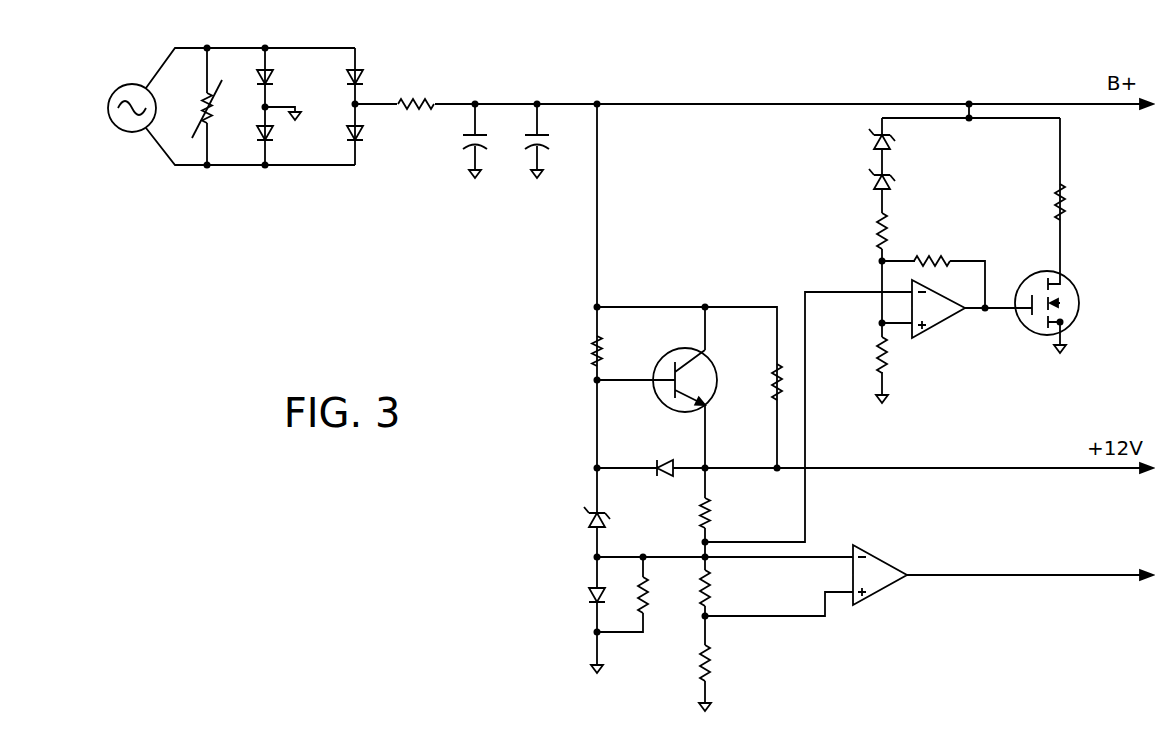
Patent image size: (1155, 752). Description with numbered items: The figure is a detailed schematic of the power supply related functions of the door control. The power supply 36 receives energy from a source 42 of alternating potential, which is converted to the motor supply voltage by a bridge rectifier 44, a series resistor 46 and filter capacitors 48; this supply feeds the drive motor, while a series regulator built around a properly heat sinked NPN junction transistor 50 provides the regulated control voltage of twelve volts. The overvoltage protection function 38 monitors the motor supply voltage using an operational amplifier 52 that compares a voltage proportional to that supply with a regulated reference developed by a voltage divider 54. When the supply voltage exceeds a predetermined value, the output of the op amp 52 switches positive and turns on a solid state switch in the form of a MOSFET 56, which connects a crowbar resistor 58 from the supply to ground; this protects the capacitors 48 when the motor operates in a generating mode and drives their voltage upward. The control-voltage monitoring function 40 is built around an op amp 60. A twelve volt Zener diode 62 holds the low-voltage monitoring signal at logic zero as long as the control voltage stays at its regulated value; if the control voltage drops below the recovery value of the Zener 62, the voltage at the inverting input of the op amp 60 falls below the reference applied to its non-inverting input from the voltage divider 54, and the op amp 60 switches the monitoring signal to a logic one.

The power supply 36 is at (532, 122).
The overvoltage protection function 38 is at (992, 252).
The power supply monitoring function 40 is at (811, 586).
The source of alternating potential 42 is at (125, 85).
The bridge rectifier 44 is at (309, 106).
The resistor 46 is at (418, 97).
The capacitors 48 is at (522, 140).
The NPN junction transistor 50 is at (716, 378).
The operational amplifier 52 is at (944, 322).
The voltage divider 54 is at (703, 540).
The MOSFET 56 is at (1078, 301).
The crowbar resistor 58 is at (1063, 197).
The op amp 60 is at (870, 554).
The Zener diode 62 is at (588, 520).